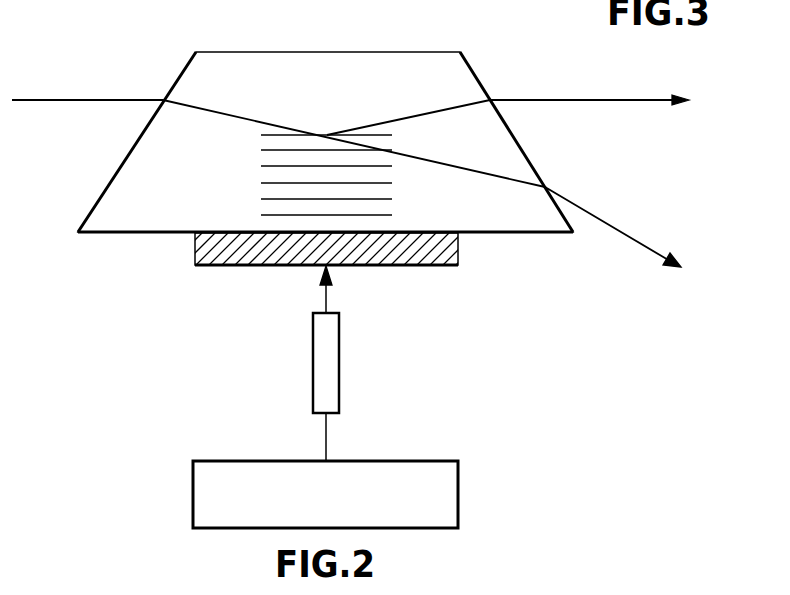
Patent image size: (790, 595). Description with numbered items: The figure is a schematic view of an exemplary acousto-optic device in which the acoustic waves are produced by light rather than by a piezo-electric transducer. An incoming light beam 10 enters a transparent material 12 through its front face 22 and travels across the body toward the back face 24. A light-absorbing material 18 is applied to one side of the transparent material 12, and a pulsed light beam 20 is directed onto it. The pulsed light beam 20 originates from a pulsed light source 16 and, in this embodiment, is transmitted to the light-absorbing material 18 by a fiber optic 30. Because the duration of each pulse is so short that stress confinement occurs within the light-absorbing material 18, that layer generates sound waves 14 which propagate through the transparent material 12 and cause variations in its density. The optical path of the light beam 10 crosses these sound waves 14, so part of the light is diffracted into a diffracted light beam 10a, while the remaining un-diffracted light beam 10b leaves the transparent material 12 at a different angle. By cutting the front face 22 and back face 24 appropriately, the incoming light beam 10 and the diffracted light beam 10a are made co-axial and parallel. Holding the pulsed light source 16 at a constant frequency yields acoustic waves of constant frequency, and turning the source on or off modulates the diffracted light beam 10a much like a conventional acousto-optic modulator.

The light beam 10 is at (63, 99).
The diffracted light beam 10a is at (592, 99).
The un-diffracted light beam 10b is at (627, 233).
The transparent material 12 is at (255, 51).
The sound waves 14 is at (266, 183).
The pulsed light source 16 is at (313, 505).
The light-absorbing material 18 is at (194, 250).
The pulsed light beam 20 is at (325, 298).
The front face 22 is at (126, 157).
The back face 24 is at (528, 160).
The fiber optic 30 is at (312, 362).